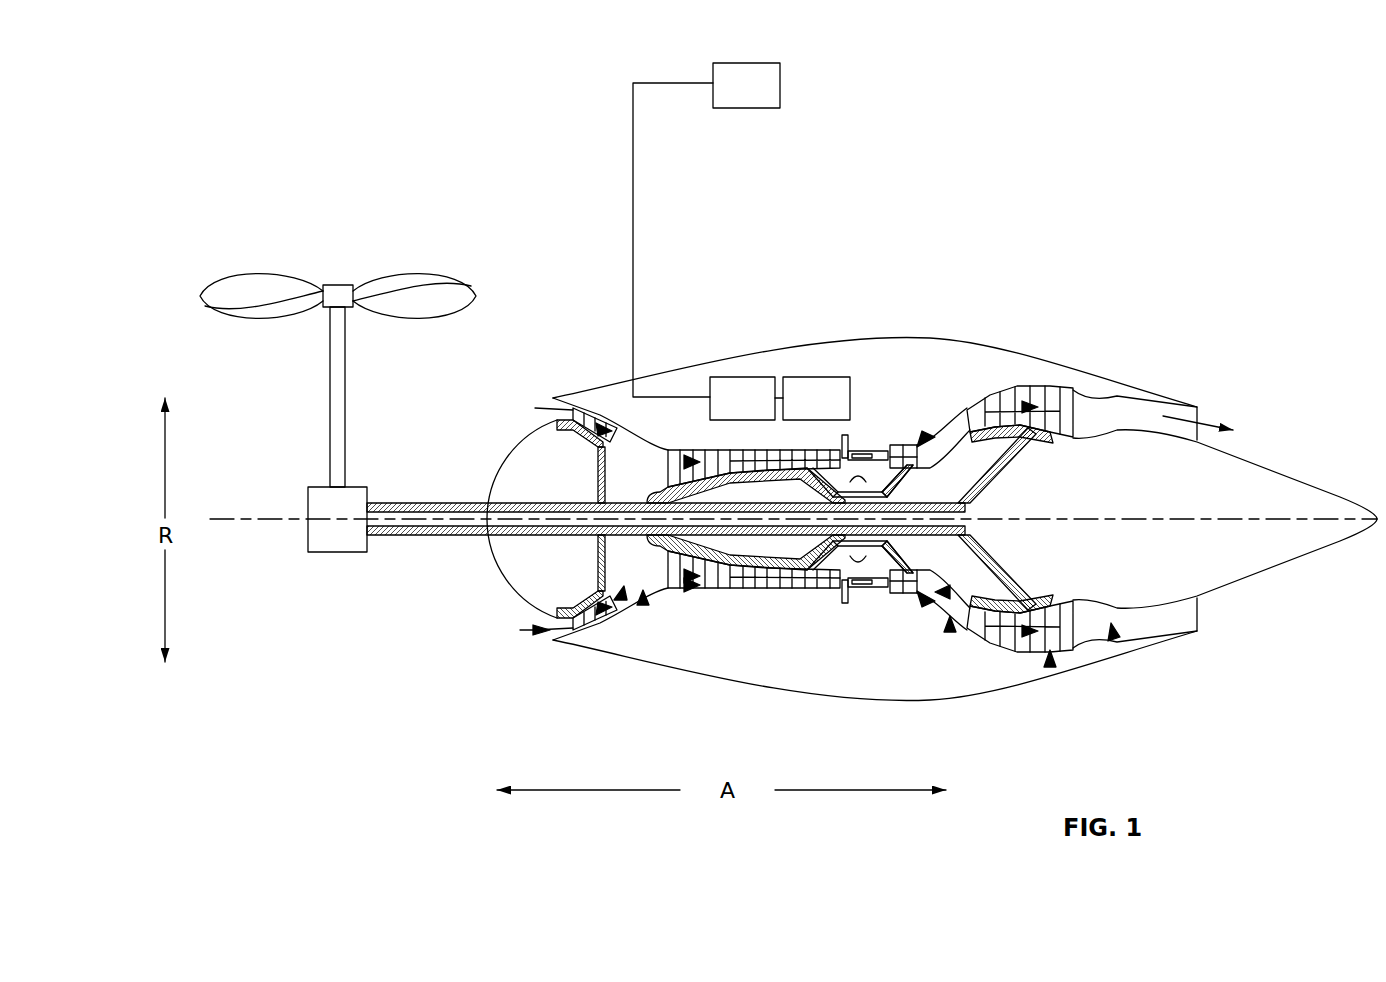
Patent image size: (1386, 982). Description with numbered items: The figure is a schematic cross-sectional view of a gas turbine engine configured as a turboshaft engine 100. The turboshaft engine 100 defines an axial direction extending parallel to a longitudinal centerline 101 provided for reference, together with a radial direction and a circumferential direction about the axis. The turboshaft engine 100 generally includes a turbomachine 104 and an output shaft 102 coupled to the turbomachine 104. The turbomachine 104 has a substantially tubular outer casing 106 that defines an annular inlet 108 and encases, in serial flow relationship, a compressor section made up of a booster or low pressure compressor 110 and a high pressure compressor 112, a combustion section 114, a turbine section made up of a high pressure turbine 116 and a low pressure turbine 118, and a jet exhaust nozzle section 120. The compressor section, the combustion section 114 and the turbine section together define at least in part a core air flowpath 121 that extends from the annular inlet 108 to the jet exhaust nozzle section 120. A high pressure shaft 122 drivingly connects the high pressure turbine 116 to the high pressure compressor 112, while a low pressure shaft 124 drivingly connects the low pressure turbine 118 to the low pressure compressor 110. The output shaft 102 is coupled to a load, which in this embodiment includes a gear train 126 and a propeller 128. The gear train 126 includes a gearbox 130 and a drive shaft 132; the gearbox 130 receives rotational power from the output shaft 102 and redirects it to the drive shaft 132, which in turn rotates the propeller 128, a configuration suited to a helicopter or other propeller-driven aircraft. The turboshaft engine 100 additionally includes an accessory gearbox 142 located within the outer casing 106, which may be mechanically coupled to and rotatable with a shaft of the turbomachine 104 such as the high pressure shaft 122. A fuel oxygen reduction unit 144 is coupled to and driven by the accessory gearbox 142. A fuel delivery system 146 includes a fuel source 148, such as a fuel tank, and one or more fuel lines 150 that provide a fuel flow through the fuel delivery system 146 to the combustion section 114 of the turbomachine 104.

The turboshaft engine 100 is at (1114, 221).
The longitudinal centerline 101 is at (1165, 522).
The output shaft 102 is at (510, 503).
The turbomachine 104 is at (770, 335).
The outer casing 106 is at (840, 693).
The annular inlet 108 is at (545, 636).
The low pressure compressor 110 is at (613, 573).
The high pressure compressor 112 is at (687, 597).
The combustion section 114 is at (850, 603).
The high pressure turbine 116 is at (942, 594).
The low pressure turbine 118 is at (1050, 662).
The jet exhaust nozzle section 120 is at (1117, 648).
The core air flowpath 121 is at (643, 604).
The high pressure shaft 122 is at (867, 490).
The low pressure shaft 124 is at (914, 503).
The gear train 126 is at (386, 463).
The propeller 128 is at (448, 238).
The gearbox 130 is at (335, 533).
The drive shaft 132 is at (330, 405).
The accessory gearbox 142 is at (834, 412).
The fuel oxygen reduction unit 144 is at (760, 412).
The fuel delivery system 146 is at (576, 121).
The fuel source 148 is at (765, 100).
The fuel lines 150 is at (633, 193).